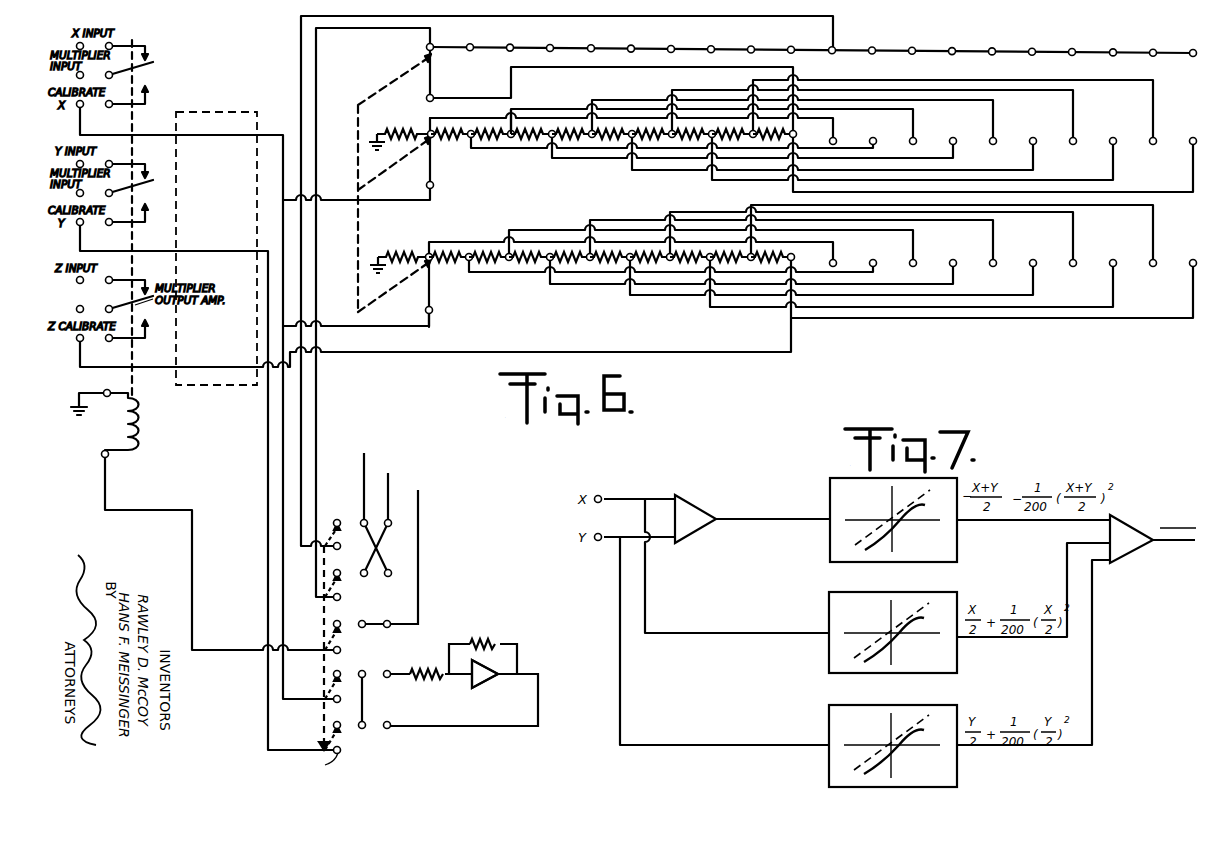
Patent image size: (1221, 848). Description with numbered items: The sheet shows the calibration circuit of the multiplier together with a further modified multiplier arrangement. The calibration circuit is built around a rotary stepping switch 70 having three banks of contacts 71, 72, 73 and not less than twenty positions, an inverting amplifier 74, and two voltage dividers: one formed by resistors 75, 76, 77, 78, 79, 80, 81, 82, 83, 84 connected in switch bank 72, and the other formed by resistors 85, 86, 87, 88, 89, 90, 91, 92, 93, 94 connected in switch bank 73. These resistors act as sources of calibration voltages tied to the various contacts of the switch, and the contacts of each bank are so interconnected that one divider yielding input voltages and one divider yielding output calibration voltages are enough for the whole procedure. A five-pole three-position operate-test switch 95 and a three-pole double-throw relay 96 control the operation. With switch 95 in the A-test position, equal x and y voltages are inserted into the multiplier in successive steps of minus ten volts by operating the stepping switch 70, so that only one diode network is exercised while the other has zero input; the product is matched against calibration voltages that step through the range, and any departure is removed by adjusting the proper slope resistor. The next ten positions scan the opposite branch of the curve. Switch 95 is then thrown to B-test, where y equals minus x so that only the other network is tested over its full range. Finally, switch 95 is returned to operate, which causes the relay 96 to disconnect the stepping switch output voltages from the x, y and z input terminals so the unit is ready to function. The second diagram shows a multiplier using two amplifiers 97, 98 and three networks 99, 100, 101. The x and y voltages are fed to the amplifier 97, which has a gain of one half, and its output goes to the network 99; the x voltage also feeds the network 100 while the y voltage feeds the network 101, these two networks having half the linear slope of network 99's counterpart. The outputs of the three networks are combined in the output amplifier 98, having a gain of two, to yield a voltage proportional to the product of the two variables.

In FIG. 6, the rotary stepping switch 70 is at (560, 195).
In FIG. 6, the bank of contacts 71 is at (494, 44).
In FIG. 6, the switch bank 72 is at (515, 130).
In FIG. 6, the switch bank 73 is at (483, 254).
In FIG. 6, the inverting amplifier 74 is at (472, 680).
In FIG. 6, the resistor 75 is at (405, 138).
In FIG. 6, the resistor 76 is at (456, 139).
In FIG. 6, the resistor 77 is at (493, 139).
In FIG. 6, the resistor 78 is at (535, 139).
In FIG. 6, the resistor 79 is at (579, 139).
In FIG. 6, the resistor 80 is at (616, 139).
In FIG. 6, the resistor 81 is at (655, 139).
In FIG. 6, the resistor 82 is at (695, 139).
In FIG. 6, the resistor 83 is at (735, 139).
In FIG. 6, the resistor 84 is at (775, 139).
In FIG. 6, the resistor 85 is at (402, 253).
In FIG. 6, the resistor 86 is at (451, 262).
In FIG. 6, the resistor 87 is at (492, 262).
In FIG. 6, the resistor 88 is at (533, 262).
In FIG. 6, the resistor 89 is at (571, 262).
In FIG. 6, the resistor 90 is at (612, 262).
In FIG. 6, the resistor 91 is at (651, 262).
In FIG. 6, the resistor 92 is at (691, 262).
In FIG. 6, the resistor 93 is at (731, 262).
In FIG. 6, the resistor 94 is at (771, 262).
In FIG. 6, the operate-test switch 95 is at (440, 620).
In FIG. 6, the relay 96 is at (161, 125).
In FIG. 7, the amplifier 97 is at (690, 507).
In FIG. 7, the output amplifier 98 is at (1128, 530).
In FIG. 7, the network 99 is at (840, 486).
In FIG. 7, the network 100 is at (862, 584).
In FIG. 7, the network 101 is at (866, 697).